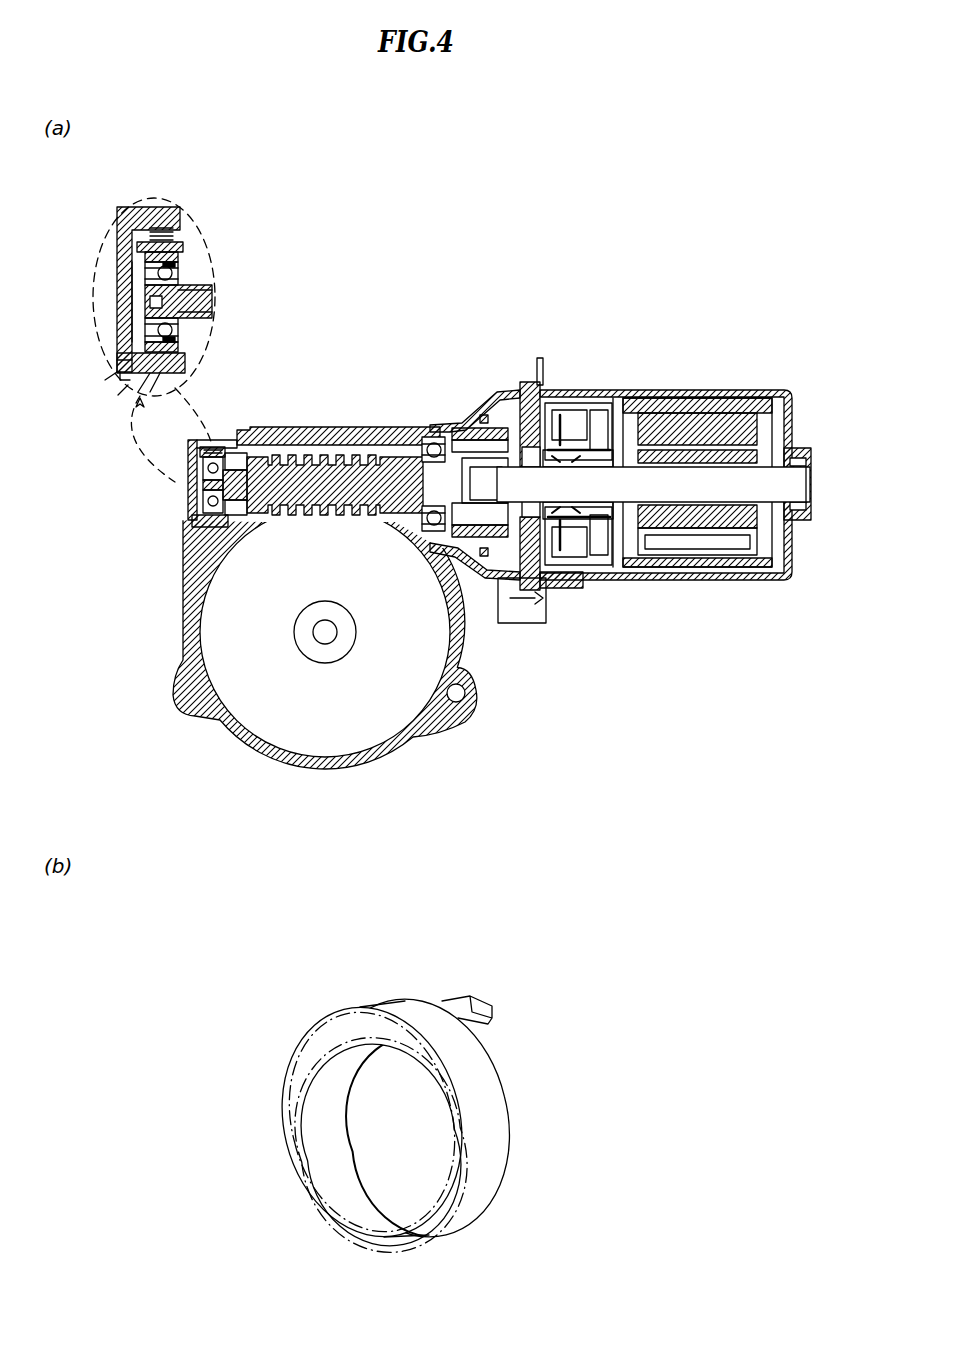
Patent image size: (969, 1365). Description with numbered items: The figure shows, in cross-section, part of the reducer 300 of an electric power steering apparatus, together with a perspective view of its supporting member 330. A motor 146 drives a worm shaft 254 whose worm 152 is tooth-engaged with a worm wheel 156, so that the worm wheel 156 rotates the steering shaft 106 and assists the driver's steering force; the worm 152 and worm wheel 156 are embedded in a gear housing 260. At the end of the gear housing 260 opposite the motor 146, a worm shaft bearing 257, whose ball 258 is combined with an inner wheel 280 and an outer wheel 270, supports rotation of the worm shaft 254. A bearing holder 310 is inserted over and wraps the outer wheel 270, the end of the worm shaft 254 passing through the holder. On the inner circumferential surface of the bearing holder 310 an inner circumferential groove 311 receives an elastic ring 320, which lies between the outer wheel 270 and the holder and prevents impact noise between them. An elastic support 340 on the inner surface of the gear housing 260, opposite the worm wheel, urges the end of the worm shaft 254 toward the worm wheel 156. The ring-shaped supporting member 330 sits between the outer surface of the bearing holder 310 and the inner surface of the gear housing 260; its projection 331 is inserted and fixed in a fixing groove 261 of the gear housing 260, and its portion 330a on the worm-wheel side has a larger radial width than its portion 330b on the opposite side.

The reducer 300 is at (748, 230).
The motor 146 is at (660, 392).
The worm 152 is at (293, 427).
The worm wheel 156 is at (378, 722).
The steering shaft 106 is at (326, 642).
The worm shaft 254 is at (400, 477).
The worm shaft bearing 257 is at (428, 437).
The ball 258 is at (195, 300).
The gear housing 260 is at (347, 457).
The fixing groove 261 is at (108, 362).
The outer wheel 270 is at (180, 270).
The inner wheel 280 is at (182, 330).
The bearing holder 310 is at (145, 265).
The inner circumferential groove 311 is at (165, 353).
The elastic ring 320 is at (148, 257).
The supporting member 330 is at (275, 995).
The portion supported by worm wheel-directional outer circumferential surface 330a is at (183, 362).
The portion supported by worm wheel's opposite directional outer circumferential sur 330b is at (185, 250).
The projection 331 is at (123, 376).
The elastic support 340 is at (143, 238).